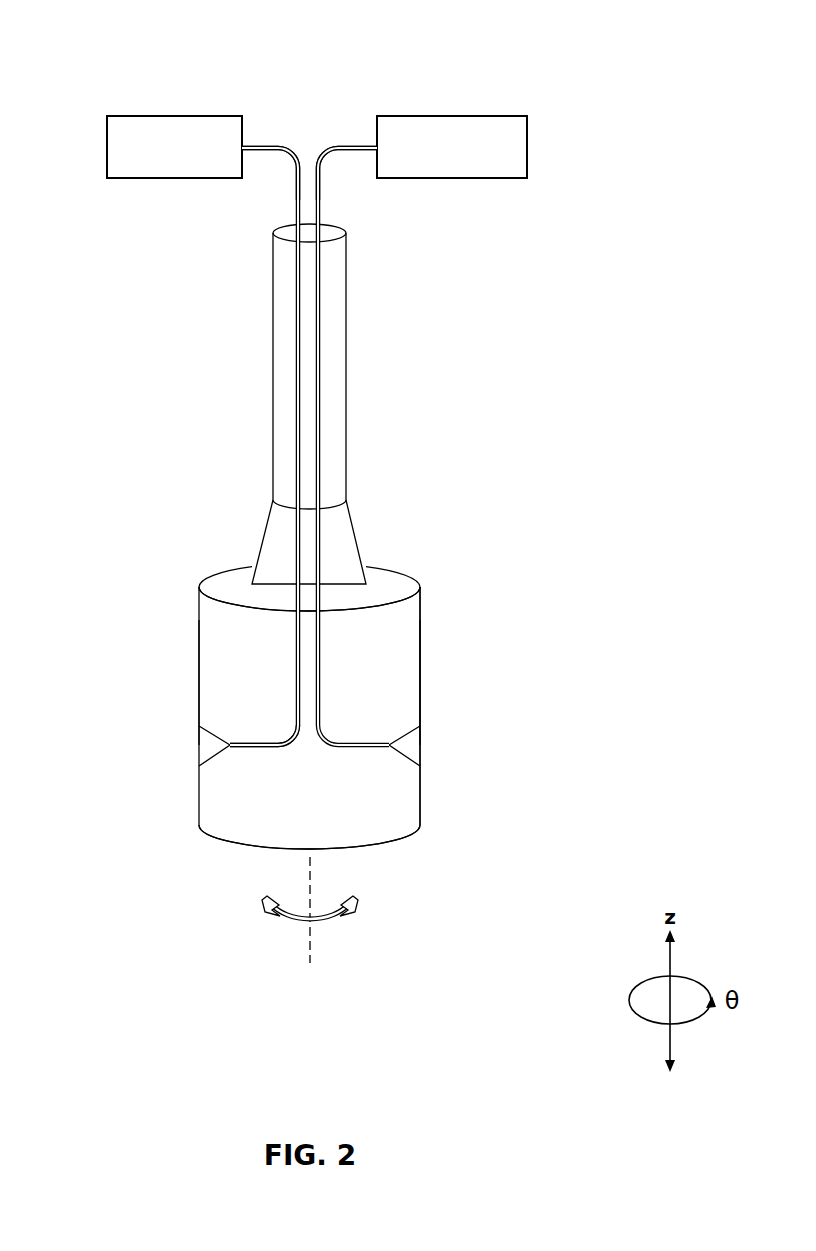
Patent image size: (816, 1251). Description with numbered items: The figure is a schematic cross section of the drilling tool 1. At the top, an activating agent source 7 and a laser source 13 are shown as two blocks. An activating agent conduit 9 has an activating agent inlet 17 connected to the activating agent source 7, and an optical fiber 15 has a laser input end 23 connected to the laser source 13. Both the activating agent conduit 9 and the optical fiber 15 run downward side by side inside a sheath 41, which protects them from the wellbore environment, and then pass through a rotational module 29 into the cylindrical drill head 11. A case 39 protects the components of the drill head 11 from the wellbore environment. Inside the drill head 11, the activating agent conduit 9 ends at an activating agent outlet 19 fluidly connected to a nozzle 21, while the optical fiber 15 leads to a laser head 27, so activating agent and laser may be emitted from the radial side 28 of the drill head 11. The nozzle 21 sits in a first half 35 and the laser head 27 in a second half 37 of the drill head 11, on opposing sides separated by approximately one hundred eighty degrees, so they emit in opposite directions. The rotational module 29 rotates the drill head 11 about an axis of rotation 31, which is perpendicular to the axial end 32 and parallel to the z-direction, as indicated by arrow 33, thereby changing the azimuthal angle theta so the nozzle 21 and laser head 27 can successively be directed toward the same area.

The drilling tool 1 is at (639, 28).
The activating agent source 7 is at (143, 116).
The laser source 13 is at (492, 116).
The activating agent inlet 17 is at (252, 139).
The laser input end 23 is at (366, 139).
The activating agent conduit 9 is at (295, 327).
The optical fiber 15 is at (321, 327).
The sheath 41 is at (272, 405).
The rotational module 29 is at (258, 540).
The case 39 is at (390, 565).
The drill head 11 is at (226, 641).
The radial side 28 is at (430, 618).
The first half 35 is at (220, 686).
The second half 37 is at (397, 662).
The nozzle 21 is at (203, 746).
The activating agent outlet 19 is at (225, 756).
The laser head 27 is at (418, 748).
The axial end 32 is at (238, 852).
The axis of rotation 31 is at (313, 865).
The arrow 33 is at (336, 922).